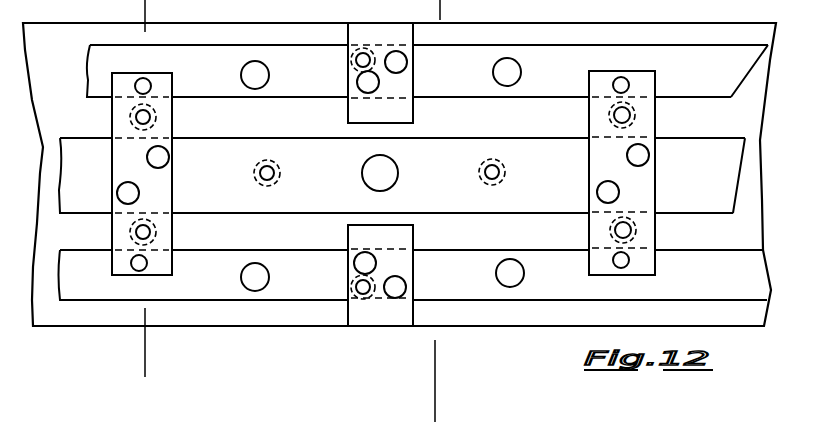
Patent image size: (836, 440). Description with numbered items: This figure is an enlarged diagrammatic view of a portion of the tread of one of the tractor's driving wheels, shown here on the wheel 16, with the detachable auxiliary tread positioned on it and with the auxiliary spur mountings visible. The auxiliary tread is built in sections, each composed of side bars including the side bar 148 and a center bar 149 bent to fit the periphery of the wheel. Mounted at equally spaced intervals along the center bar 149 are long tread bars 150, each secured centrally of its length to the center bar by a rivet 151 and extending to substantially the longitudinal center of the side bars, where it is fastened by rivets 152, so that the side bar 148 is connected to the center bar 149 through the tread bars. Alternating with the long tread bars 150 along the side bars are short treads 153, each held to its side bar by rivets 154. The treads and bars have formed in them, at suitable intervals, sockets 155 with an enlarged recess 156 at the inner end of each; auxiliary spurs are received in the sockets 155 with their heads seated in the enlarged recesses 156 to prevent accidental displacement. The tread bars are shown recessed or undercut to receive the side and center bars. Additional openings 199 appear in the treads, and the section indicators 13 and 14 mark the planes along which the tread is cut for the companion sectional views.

The base plate 16 is at (748, 30).
The side bar 148 is at (564, 43).
The center bar 149 is at (716, 140).
The long tread bar 150 is at (175, 178).
The rivet 151 is at (120, 188).
The rivet 152 is at (150, 82).
The short tread 153 is at (400, 108).
The rivet 154 is at (379, 88).
The socket 155 is at (352, 58).
The enlarged recess 156 is at (366, 45).
The large hole 199 is at (266, 73).
The section line 13 is at (160, 3).
The section line 14 is at (453, 379).